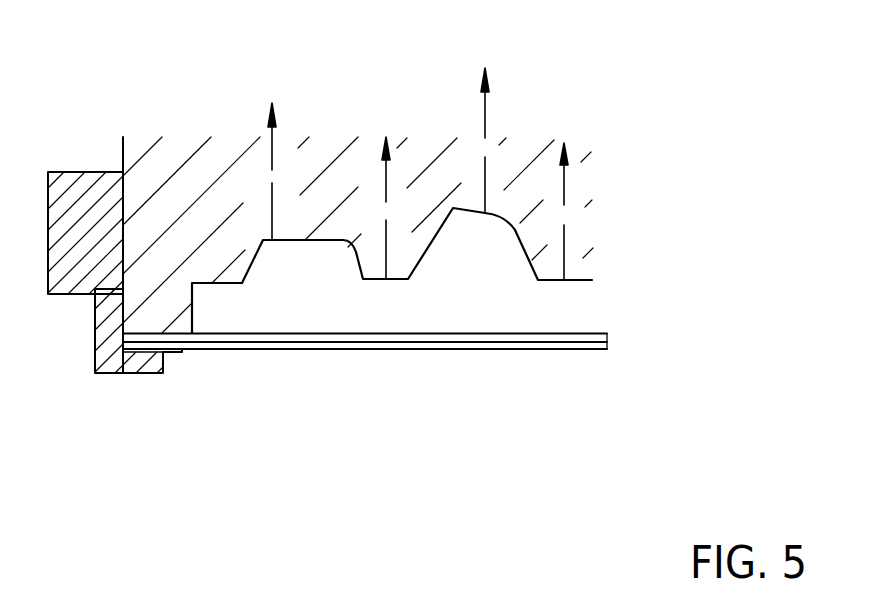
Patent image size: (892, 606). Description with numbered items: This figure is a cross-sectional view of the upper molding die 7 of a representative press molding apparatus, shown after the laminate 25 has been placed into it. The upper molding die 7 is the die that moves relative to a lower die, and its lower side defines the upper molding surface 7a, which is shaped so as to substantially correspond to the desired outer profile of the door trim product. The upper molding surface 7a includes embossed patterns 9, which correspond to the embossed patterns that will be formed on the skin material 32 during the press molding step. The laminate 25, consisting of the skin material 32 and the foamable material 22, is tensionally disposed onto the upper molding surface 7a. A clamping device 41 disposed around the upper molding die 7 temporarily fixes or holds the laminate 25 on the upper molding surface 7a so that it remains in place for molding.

The upper molding die 7 is at (153, 163).
The upper molding surface 7a is at (522, 247).
The embossed patterns 9 is at (444, 238).
The foamable material 22 is at (332, 350).
The skin material 32 is at (427, 334).
The laminate 25 is at (570, 375).
The clamping device 41 is at (175, 353).